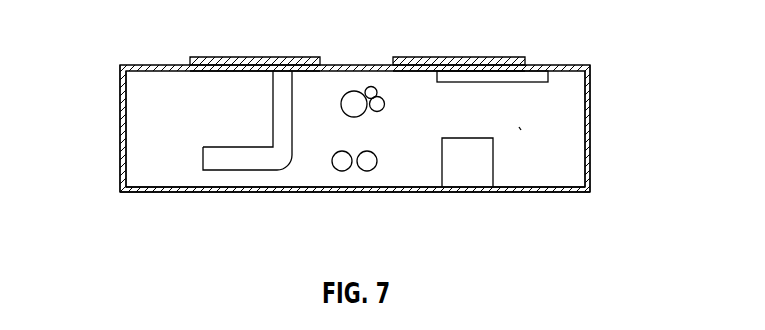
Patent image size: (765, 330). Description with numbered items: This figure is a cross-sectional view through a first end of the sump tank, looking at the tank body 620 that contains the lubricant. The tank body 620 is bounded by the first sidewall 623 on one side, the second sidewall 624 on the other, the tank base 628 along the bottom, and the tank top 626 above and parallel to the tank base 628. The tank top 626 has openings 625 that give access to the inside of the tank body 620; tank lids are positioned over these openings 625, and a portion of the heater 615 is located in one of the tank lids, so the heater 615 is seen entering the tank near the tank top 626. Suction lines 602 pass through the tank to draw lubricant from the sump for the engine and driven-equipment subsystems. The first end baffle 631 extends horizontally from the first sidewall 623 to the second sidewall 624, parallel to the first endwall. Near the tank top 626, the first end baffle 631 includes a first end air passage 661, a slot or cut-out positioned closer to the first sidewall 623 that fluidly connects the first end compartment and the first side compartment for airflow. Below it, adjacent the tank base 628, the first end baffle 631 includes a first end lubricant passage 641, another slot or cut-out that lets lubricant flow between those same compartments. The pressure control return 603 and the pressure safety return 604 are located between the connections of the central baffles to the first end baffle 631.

The tank body 620 is at (573, 65).
The first sidewall 623 is at (590, 128).
The second sidewall 624 is at (120, 138).
The tank base 628 is at (372, 193).
The heater 615 is at (245, 57).
The openings 625 is at (230, 71).
The first end air passage 661 is at (490, 82).
The suction lines 602 is at (361, 91).
The tank top 626 is at (371, 86).
The pressure safety return 604 is at (342, 161).
The pressure control return 603 is at (367, 161).
The first end lubricant passage 641 is at (470, 167).
The first end baffle 631 is at (520, 127).